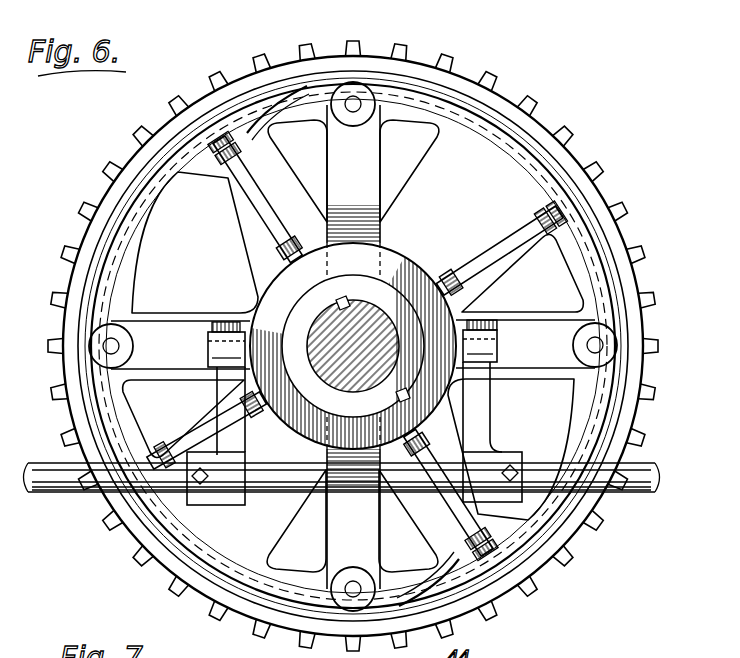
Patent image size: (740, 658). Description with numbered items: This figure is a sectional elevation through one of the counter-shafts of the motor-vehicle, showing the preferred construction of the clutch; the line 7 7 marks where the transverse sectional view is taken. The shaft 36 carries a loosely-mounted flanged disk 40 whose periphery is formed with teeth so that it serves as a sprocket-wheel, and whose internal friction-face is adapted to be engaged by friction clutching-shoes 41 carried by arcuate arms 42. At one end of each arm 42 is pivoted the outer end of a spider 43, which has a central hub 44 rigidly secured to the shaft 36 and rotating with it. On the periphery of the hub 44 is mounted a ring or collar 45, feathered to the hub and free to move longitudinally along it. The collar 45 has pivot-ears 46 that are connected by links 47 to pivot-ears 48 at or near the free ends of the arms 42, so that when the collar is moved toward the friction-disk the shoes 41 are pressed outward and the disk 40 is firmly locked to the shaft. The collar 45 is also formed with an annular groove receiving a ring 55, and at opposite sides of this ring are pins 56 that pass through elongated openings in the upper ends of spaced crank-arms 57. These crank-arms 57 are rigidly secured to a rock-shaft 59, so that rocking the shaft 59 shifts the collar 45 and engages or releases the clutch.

The section line 7 7 is at (92, 192).
The shaft 36 is at (325, 340).
The flanged disk 40 is at (537, 563).
The friction clutching-shoe 41 is at (543, 537).
The arcuate arm 42 is at (237, 123).
The spider 43 is at (353, 346).
The hub 44 is at (387, 293).
The ring or collar 45 is at (387, 261).
The pivot-ears 46 is at (160, 235).
The links 47 is at (252, 193).
The pivot-ears 48 is at (230, 167).
The ring 55 is at (460, 330).
The pins 56 is at (207, 348).
The crank-arms 57 is at (477, 427).
The rock-shaft 59 is at (640, 462).